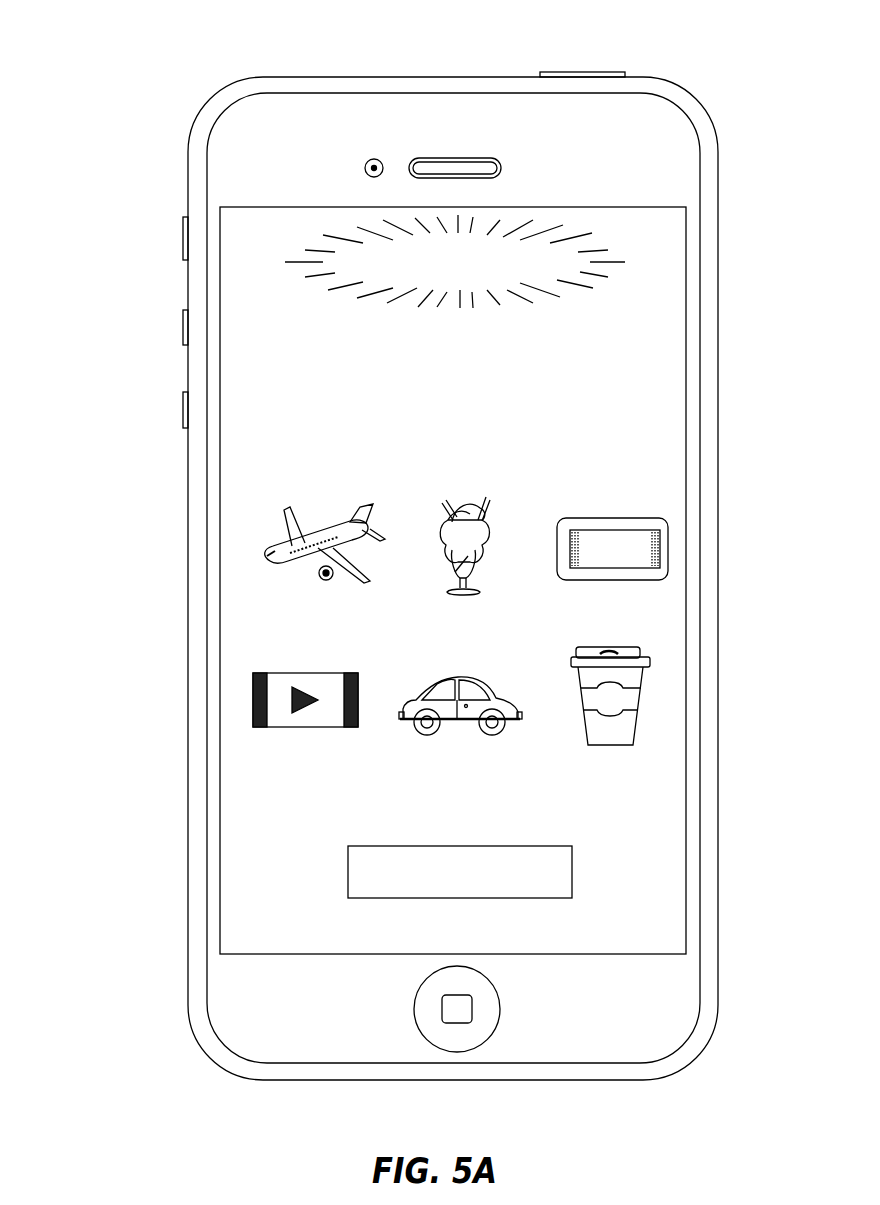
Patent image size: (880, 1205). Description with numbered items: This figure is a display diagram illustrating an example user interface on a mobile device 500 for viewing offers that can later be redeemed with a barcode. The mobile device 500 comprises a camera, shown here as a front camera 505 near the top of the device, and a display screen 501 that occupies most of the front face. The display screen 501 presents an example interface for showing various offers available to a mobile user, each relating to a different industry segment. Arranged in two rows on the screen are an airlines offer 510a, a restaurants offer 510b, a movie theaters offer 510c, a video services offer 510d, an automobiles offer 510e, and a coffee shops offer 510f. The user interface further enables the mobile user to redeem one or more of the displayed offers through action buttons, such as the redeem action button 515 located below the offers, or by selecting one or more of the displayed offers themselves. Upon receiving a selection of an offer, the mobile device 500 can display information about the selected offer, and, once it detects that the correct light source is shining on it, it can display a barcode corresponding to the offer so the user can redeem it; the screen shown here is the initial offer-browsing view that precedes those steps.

The mobile device 500 is at (132, 102).
The display screen 501 is at (693, 244).
The front camera 505 is at (378, 160).
The airlines offer 510a is at (333, 525).
The restaurants offer 510b is at (478, 502).
The movie theaters offer 510c is at (600, 518).
The video services offer 510d is at (292, 673).
The automobiles offer 510e is at (452, 677).
The coffee shops offer 510f is at (613, 648).
The redeem action button 515 is at (503, 846).